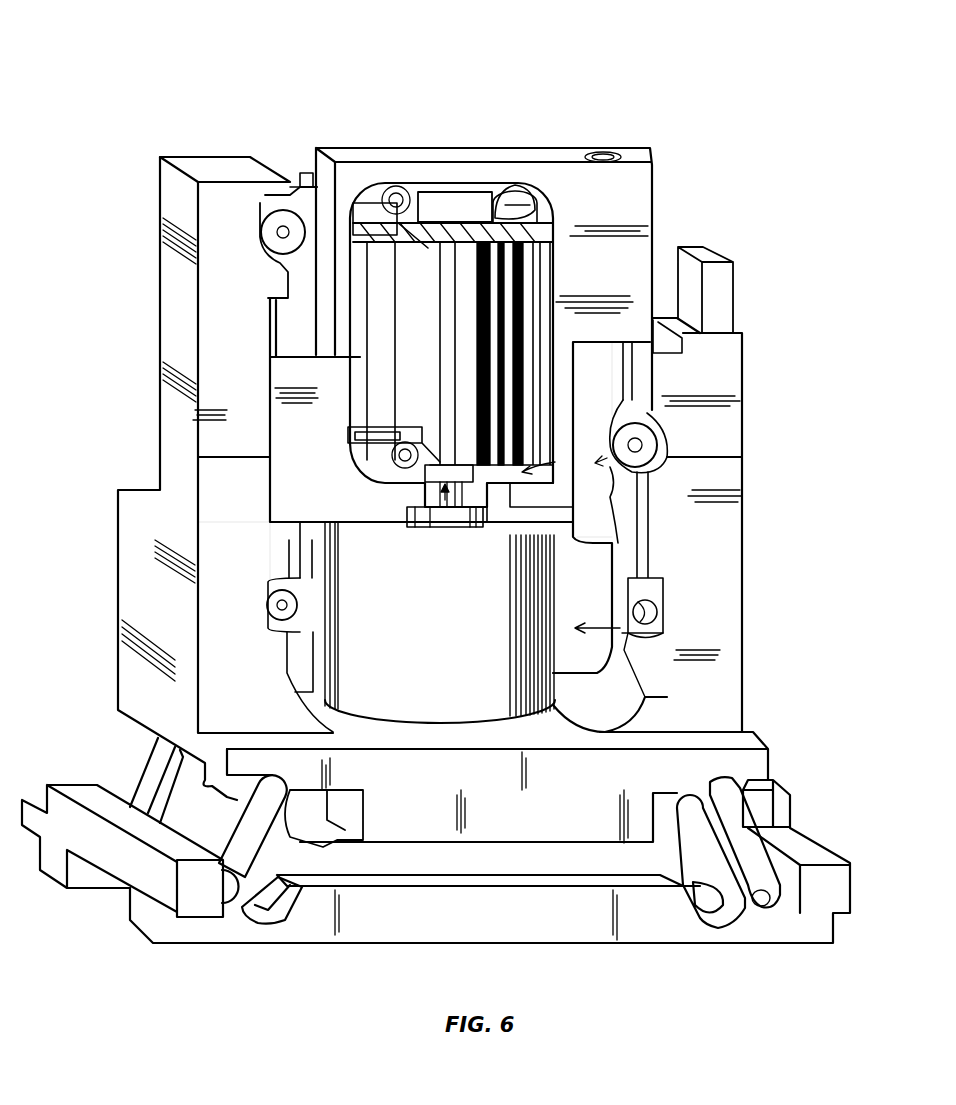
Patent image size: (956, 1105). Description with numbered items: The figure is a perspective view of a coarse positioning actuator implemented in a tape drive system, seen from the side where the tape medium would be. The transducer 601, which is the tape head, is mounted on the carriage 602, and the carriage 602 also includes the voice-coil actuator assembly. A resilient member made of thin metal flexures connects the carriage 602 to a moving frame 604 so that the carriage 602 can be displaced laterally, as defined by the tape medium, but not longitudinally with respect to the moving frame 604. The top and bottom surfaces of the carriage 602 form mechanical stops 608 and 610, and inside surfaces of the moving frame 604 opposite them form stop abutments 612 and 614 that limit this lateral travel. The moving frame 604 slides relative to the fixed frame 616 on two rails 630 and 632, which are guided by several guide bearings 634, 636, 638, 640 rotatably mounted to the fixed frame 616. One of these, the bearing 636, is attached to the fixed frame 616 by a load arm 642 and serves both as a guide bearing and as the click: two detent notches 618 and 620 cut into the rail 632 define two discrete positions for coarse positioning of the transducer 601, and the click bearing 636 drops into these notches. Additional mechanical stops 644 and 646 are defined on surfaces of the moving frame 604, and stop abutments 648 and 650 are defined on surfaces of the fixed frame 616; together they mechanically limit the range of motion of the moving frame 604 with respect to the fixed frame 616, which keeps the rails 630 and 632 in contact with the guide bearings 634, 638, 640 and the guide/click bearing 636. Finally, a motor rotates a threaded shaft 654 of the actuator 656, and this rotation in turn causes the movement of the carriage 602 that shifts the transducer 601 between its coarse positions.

The transducer 601 is at (470, 358).
The carriage 602 is at (365, 400).
The moving frame 604 is at (315, 468).
The mechanical stop 608 is at (457, 180).
The mechanical stop 610 is at (440, 500).
The stop abutment 612 is at (540, 172).
The stop abutment 614 is at (525, 540).
The fixed frame 616 is at (180, 190).
The detent notch 618 is at (612, 490).
The detent notch 620 is at (623, 509).
The rail 630 is at (310, 176).
The rail 632 is at (612, 368).
The guide bearing 634 is at (262, 243).
The guide bearing 636 is at (663, 453).
The guide bearing 638 is at (270, 615).
The guide bearing 640 is at (580, 390).
The load arm 642 is at (650, 558).
The mechanical stop 644 is at (272, 347).
The mechanical stop 646 is at (278, 578).
The stop abutment 648 is at (278, 305).
The stop abutment 650 is at (268, 530).
The threaded shaft 654 is at (418, 512).
The actuator 656 is at (663, 630).